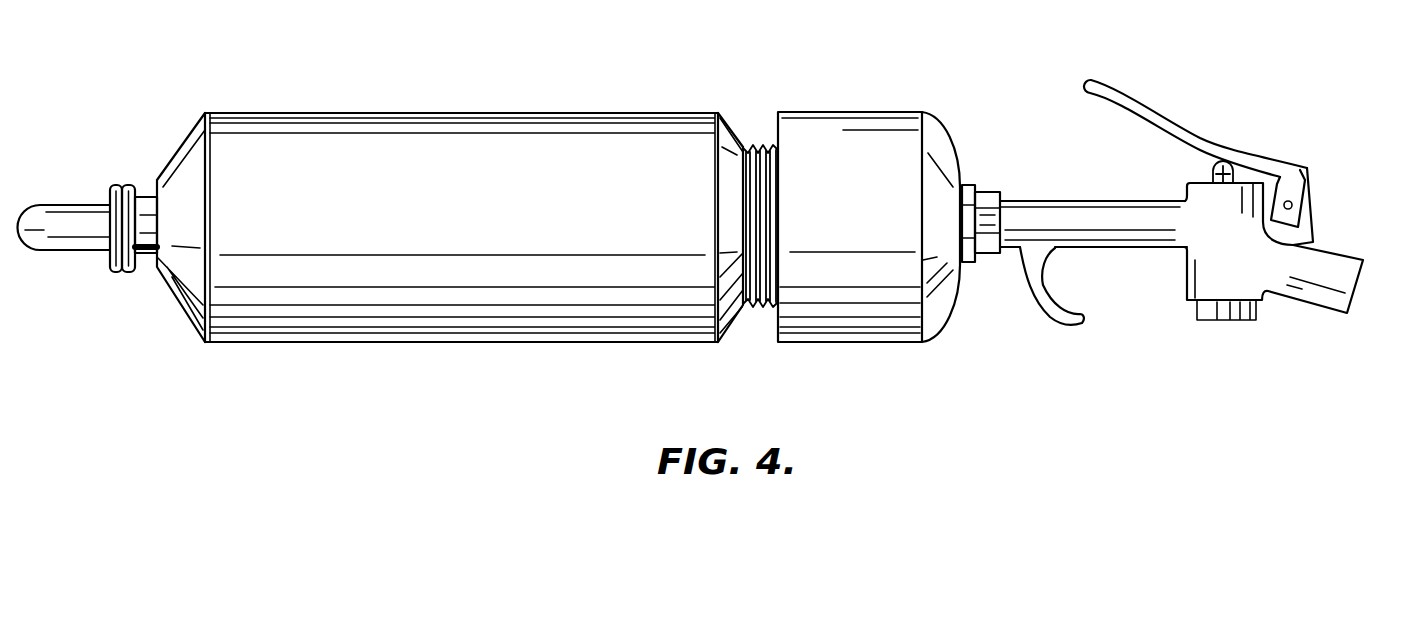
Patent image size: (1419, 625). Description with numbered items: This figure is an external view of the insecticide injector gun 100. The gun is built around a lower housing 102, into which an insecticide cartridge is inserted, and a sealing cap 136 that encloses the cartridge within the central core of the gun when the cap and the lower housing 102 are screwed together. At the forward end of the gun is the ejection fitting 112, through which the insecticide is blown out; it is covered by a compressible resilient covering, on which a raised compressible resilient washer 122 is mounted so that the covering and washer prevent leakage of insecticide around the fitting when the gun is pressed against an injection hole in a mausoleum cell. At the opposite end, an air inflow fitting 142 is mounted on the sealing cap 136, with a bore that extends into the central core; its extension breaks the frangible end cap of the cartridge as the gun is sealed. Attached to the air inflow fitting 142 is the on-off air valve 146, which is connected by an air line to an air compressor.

The injector gun 100 is at (507, 112).
The lower housing 102 is at (250, 112).
The ejection fitting 112 is at (46, 207).
The raised compressible resilient washer 122 is at (130, 184).
The sealing cap 136 is at (888, 112).
The air inflow fitting 142 is at (980, 185).
The on-off air valve 146 is at (1255, 150).